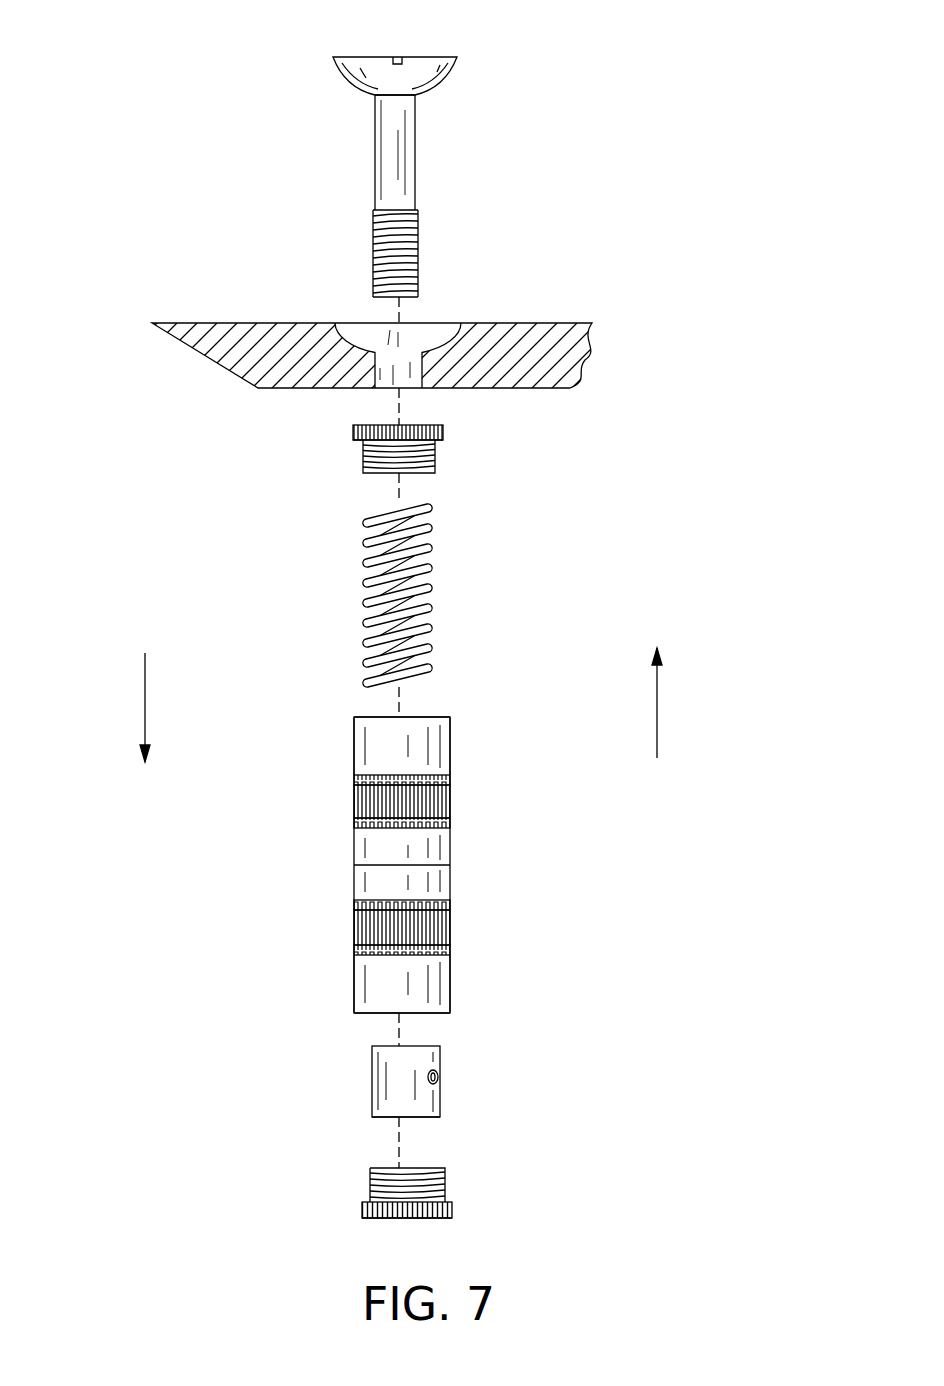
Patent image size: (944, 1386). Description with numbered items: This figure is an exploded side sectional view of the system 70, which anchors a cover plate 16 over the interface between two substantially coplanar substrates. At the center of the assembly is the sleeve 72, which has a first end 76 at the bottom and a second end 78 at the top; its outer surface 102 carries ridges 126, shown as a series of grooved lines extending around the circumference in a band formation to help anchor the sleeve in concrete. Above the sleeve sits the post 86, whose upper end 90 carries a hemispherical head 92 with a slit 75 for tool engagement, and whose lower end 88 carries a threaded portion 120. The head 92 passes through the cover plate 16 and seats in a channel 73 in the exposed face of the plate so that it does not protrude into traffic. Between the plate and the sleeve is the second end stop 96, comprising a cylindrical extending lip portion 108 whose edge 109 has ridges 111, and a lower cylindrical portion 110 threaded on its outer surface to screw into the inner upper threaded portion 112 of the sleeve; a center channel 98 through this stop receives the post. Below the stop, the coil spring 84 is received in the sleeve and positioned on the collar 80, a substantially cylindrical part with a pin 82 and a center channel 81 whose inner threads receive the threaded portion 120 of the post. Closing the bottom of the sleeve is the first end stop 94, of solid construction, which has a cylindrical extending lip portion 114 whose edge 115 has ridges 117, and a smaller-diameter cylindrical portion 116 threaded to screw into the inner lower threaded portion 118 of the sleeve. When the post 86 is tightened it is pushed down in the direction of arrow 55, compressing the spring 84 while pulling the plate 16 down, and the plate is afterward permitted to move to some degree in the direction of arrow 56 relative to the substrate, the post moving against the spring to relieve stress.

The cover plate 16 is at (556, 322).
The arrow 55 is at (145, 705).
The arrow 56 is at (657, 700).
The system 70 is at (158, 265).
The sleeve 72 is at (393, 863).
The channel 73 is at (345, 326).
The slit 75 is at (398, 57).
The first end 76 is at (354, 1008).
The second end 78 is at (354, 722).
The collar 80 is at (407, 1093).
The center channel 81 is at (372, 1117).
The pin 82 is at (438, 1075).
The spring 84 is at (367, 610).
The post 86 is at (418, 160).
The lower end 88 is at (420, 297).
The upper end 90 is at (418, 98).
The hemispherical head 92 is at (340, 72).
The first end stop 94 is at (394, 1209).
The second end stop 96 is at (388, 442).
The center channel 98 is at (388, 442).
The outer surface 102 is at (358, 845).
The cylindrical extending lip portion 108 is at (443, 415).
The edge 109 is at (355, 437).
The lower cylindrical portion 110 is at (437, 470).
The ridges 111 is at (422, 424).
The inner upper threaded portion 112 is at (450, 717).
The cylindrical extending lip portion 114 is at (394, 1216).
The edge 115 is at (452, 1210).
The cylindrical portion 116 is at (370, 1178).
The ridges 117 is at (410, 1218).
The inner lower threaded portion 118 is at (362, 1016).
The threaded portion 120 is at (378, 248).
The ridges 126 is at (356, 928).